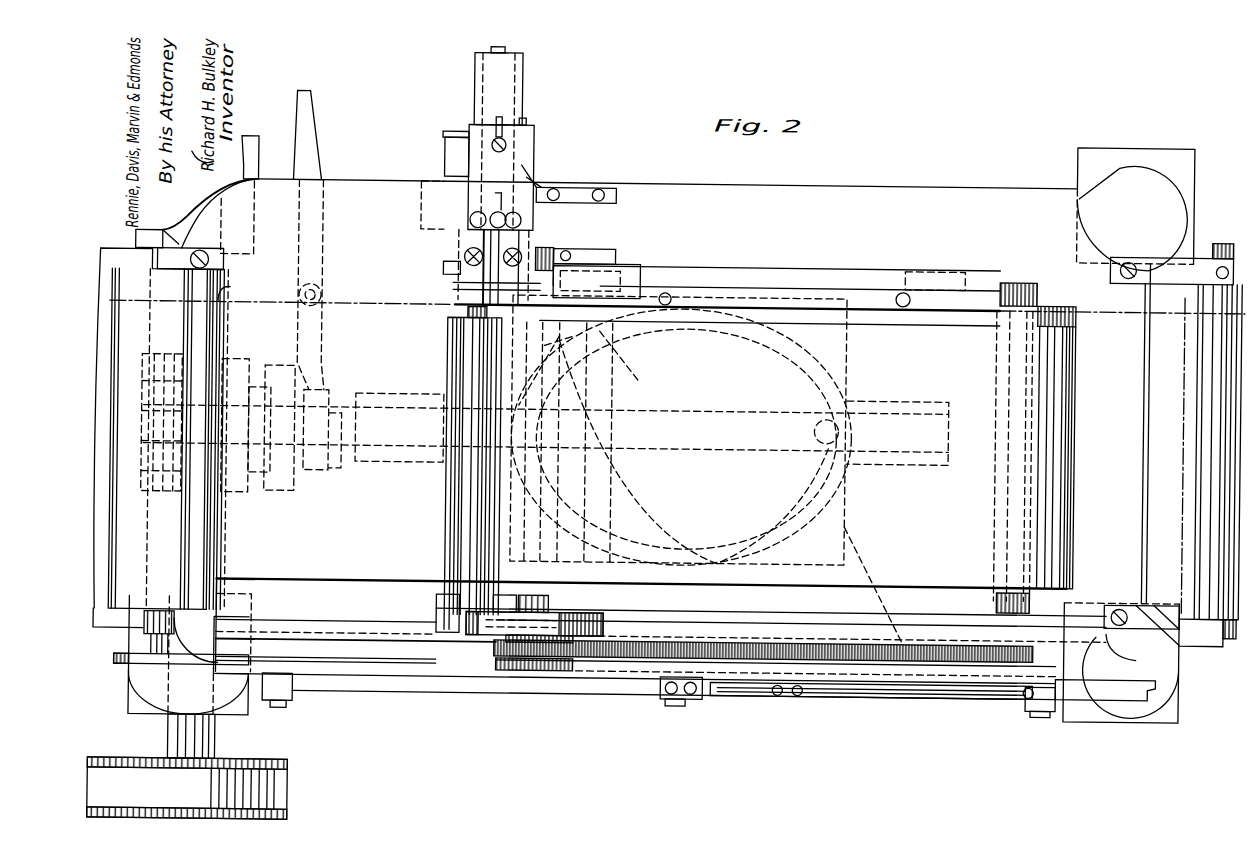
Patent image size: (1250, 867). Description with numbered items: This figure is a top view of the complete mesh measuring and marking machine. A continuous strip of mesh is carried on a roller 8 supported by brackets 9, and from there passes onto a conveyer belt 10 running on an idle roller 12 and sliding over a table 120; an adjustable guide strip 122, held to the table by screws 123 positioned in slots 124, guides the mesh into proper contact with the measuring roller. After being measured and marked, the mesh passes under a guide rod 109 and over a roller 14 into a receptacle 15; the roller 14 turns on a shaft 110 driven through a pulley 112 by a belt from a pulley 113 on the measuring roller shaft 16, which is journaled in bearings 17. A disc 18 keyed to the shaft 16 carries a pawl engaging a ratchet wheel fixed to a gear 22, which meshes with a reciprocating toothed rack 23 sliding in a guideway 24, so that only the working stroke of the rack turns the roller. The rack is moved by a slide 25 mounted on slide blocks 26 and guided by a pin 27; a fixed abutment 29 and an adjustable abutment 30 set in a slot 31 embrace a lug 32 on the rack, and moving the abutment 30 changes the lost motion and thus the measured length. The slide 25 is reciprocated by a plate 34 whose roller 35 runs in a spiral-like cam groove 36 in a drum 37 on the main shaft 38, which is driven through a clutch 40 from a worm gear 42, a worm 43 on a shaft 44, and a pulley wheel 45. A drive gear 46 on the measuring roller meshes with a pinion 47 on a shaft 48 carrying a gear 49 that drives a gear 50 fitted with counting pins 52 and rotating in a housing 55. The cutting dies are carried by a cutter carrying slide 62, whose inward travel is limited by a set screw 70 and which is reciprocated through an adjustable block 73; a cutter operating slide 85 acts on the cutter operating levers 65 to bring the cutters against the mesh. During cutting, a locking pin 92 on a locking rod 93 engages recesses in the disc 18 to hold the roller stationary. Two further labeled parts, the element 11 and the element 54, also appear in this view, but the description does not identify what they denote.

The roller 8 is at (1210, 288).
The brackets 9 is at (1200, 633).
The conveyer belt 10 is at (1085, 372).
The frame bar 11 is at (452, 660).
The idle roller 12 is at (1085, 316).
The roller 14 is at (146, 506).
The receptacle 15 is at (125, 625).
The shaft 16 is at (554, 252).
The bearings 17 is at (545, 250).
The disc 18 is at (497, 632).
The gear 22 is at (547, 665).
The toothed rack 23 is at (640, 652).
The guideway 24 is at (418, 660).
The slide 25 is at (358, 690).
The slide blocks 26 is at (300, 695).
The pin 27 is at (702, 696).
The fixed abutment 29 is at (680, 700).
The adjustable abutment 30 is at (795, 690).
The slot 31 is at (862, 690).
The lug 32 is at (722, 688).
The plate 34 is at (852, 575).
The roller 35 is at (818, 423).
The cam groove 36 is at (748, 360).
The drum 37 is at (847, 343).
The main shaft 38 is at (375, 465).
The clutch 40 is at (290, 494).
The worm gear 42 is at (232, 318).
The worm 43 is at (148, 392).
The shaft 44 is at (222, 736).
The pulley wheel 45 is at (293, 788).
The drive gear 46 is at (575, 343).
The pinion 47 is at (615, 338).
The shaft 48 is at (615, 322).
The gear 49 is at (630, 285).
The gear 50 is at (580, 288).
The counting pins 52 is at (545, 325).
The carriage rail 54 is at (458, 325).
The housing 55 is at (455, 278).
The cutter carrying slide 62 is at (533, 156).
The cutter operating levers 65 is at (537, 237).
The set screw 70 is at (525, 117).
The block 73 is at (443, 164).
The cutter operating slide 85 is at (514, 93).
The locking pin 92 is at (445, 600).
The locking rod 93 is at (480, 512).
The guide rod 109 is at (448, 358).
The shaft 110 is at (152, 228).
The pulley 112 is at (125, 663).
The pulley 113 is at (512, 665).
The table 120 is at (917, 261).
The adjustable guide strip 122 is at (870, 292).
The screws 123 is at (672, 292).
The slots 124 is at (667, 286).